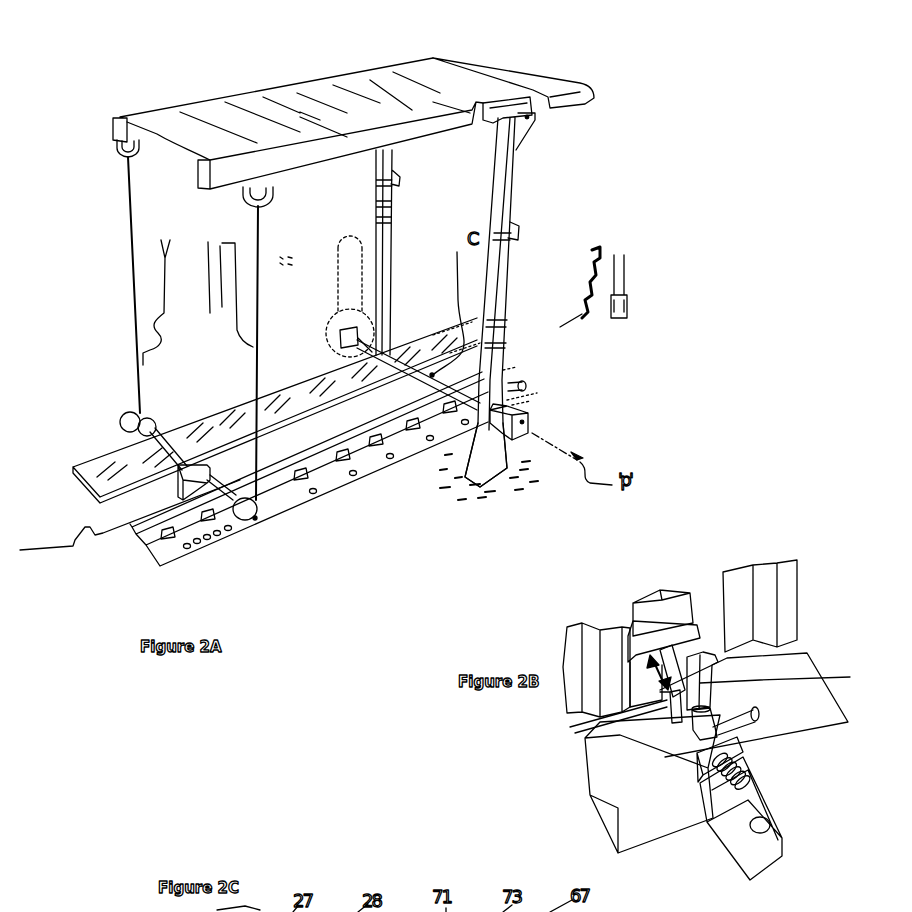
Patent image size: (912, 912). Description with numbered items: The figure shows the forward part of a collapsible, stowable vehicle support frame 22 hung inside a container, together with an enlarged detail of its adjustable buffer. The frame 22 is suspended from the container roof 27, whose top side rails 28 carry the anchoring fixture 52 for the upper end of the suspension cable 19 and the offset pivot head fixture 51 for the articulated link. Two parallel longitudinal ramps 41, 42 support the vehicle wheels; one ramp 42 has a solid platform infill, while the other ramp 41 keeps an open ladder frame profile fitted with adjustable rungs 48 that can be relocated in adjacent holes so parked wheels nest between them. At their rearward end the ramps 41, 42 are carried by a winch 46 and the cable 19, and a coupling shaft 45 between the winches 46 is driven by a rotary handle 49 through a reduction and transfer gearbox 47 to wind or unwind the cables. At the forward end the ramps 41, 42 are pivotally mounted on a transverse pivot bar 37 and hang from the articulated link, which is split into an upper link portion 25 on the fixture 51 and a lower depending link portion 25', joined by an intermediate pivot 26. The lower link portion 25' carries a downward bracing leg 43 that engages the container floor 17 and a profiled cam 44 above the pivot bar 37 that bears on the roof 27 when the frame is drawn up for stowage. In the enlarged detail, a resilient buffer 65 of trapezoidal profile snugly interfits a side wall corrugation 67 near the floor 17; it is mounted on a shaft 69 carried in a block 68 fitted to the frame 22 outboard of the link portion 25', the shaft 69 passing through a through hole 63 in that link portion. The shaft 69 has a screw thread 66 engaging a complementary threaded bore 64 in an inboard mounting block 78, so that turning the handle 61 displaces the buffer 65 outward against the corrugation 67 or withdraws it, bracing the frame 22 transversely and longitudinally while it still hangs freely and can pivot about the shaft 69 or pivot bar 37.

In FIG. 2A, the container floor 17 is at (479, 522).
In FIG. 2B, the container floor 17 is at (798, 668).
In FIG. 2A, the suspension cable 19 is at (198, 299).
In FIG. 2A, the vehicle support frame 22 is at (232, 541).
In FIG. 2B, the vehicle support frame 22 is at (632, 793).
In FIG. 2A, the articulated link 25 is at (548, 292).
In FIG. 2A, the lower depending link portion 25' is at (598, 280).
In FIG. 2B, the lower depending link portion 25' is at (761, 591).
In FIG. 2A, the intermediate pivot 26 is at (516, 232).
In FIG. 2A, the container roof 27 is at (322, 110).
In FIG. 2A, the top side rail 28 is at (402, 133).
In FIG. 2A, the transverse pivot bar 37 is at (401, 252).
In FIG. 2B, the transverse pivot bar 37 is at (762, 828).
In FIG. 2A, the ramp 41 is at (377, 460).
In FIG. 2A, the ramp 42 is at (290, 400).
In FIG. 2A, the bracing strut or leg 43 is at (495, 468).
In FIG. 2A, the latching detent or cam 44 is at (523, 386).
In FIG. 2A, the coupling shaft 45 is at (223, 500).
In FIG. 2A, the winch 46 is at (262, 518).
In FIG. 2A, the reduction and transfer gearbox 47 is at (137, 520).
In FIG. 2A, the adjustable rung 48 is at (300, 468).
In FIG. 2A, the rotary handle 49 is at (76, 546).
In FIG. 2A, the offset pivot head fixture 51 is at (530, 88).
In FIG. 2A, the fixture 52 is at (270, 185).
In FIG. 2B, the handle 61 is at (757, 713).
In FIG. 2B, the through hole 63 is at (850, 677).
In FIG. 2B, the threaded bore 64 is at (713, 765).
In FIG. 2A, the buffer 65 is at (524, 420).
In FIG. 2B, the buffer 65 is at (663, 630).
In FIG. 2B, the screw thread 66 is at (733, 777).
In FIG. 2B, the side wall corrugation 67 is at (651, 610).
In FIG. 2B, the block 68 is at (707, 700).
In FIG. 2B, the shaft 69 is at (712, 740).
In FIG. 2B, the inboard mounting block 78 is at (733, 750).